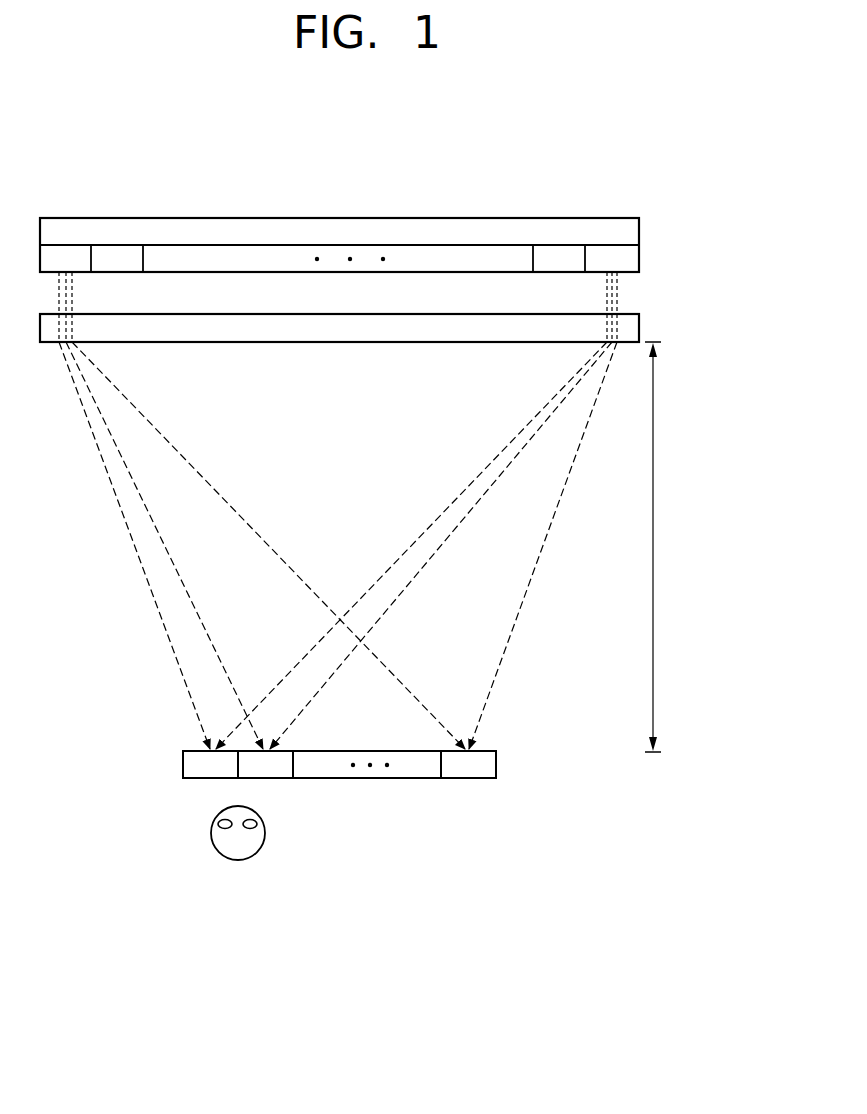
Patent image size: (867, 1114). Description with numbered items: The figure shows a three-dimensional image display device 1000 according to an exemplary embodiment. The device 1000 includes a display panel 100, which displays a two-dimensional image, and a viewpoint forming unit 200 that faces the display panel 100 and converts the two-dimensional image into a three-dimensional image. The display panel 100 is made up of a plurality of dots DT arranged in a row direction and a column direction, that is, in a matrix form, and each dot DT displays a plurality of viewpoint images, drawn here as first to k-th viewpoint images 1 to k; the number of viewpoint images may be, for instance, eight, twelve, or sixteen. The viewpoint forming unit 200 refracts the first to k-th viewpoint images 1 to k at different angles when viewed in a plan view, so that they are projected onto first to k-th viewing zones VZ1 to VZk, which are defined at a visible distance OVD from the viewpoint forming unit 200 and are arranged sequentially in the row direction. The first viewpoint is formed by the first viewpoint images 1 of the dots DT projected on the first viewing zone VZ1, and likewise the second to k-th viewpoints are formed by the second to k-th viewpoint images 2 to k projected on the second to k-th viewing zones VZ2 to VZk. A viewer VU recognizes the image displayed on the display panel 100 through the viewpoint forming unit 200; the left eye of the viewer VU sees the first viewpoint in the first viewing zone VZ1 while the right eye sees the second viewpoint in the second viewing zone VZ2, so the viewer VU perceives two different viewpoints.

The 3D image display device 1000 is at (643, 187).
The display panel 100 is at (380, 245).
The viewpoint forming unit 200 is at (630, 327).
The dot DT is at (627, 257).
The visible distance OVD is at (671, 547).
The first viewing zone VZ1 is at (210, 764).
The second viewing zone VZ2 is at (265, 764).
The k-th viewing zone VZk is at (468, 764).
The viewer VU is at (235, 861).
The first viewpoint image 1 is at (333, 545).
The second viewpoint image 2 is at (339, 545).
The k-th viewpoint image k is at (344, 545).